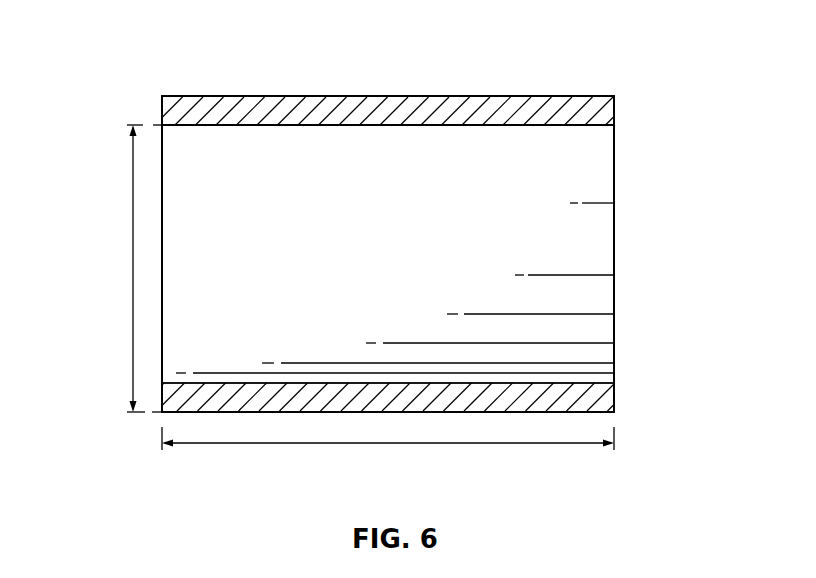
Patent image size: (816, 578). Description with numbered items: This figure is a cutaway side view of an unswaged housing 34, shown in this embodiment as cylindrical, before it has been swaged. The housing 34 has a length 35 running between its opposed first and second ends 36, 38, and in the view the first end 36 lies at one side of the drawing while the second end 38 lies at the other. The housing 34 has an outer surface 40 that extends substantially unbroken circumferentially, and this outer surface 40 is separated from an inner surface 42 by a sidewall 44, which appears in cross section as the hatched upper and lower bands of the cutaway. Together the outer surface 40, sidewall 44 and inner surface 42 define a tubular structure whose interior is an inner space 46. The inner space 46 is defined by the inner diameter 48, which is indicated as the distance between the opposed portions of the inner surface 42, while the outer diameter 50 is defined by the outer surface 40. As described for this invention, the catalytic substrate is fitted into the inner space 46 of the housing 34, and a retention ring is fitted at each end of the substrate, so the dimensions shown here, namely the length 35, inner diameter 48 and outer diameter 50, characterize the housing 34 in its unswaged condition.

The outer diameter 50 is at (168, 86).
The outer surface 40 is at (277, 96).
The sidewall 44 is at (342, 126).
The inner surface 42 is at (297, 383).
The inner space 46 is at (403, 267).
The second end 38 is at (150, 236).
The inner diameter 48 is at (133, 270).
The length 35 is at (311, 444).
The first end 36 is at (632, 236).
The unswaged housing 34 is at (662, 371).